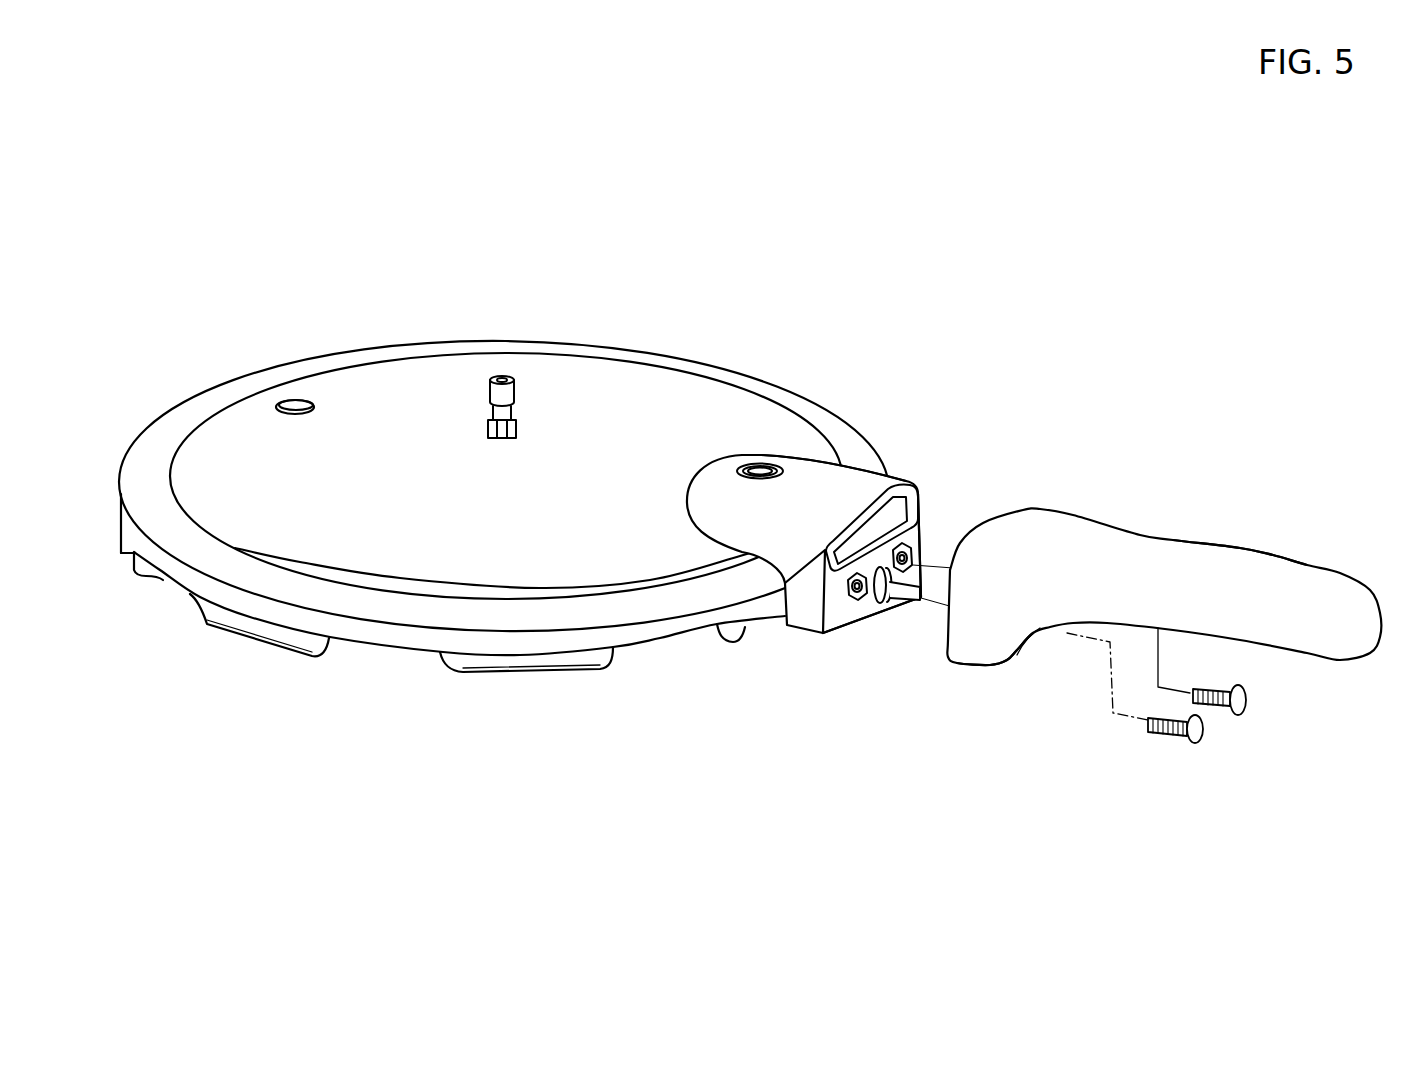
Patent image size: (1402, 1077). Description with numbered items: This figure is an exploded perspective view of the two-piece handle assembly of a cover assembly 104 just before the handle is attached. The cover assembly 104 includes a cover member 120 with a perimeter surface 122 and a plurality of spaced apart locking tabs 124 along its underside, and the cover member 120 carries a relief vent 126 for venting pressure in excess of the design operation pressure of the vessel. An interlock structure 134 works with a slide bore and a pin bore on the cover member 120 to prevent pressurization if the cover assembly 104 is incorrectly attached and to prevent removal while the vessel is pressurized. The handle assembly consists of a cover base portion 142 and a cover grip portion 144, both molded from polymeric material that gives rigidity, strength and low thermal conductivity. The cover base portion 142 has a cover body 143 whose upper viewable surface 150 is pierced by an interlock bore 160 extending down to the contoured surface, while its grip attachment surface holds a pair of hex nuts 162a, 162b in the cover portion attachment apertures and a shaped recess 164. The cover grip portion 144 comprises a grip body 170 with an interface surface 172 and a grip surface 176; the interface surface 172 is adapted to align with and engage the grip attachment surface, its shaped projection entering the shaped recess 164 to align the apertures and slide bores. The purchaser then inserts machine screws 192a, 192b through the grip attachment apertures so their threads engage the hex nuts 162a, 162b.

The cover assembly 104 is at (421, 288).
The cover member 120 is at (327, 388).
The perimeter surface 122 is at (758, 637).
The locking tabs 124 is at (123, 572).
The relief vent 126 is at (519, 387).
The interlock structure 134 is at (908, 598).
The cover base portion 142 is at (860, 482).
The cover body 143 is at (866, 493).
The cover grip portion 144 is at (1307, 568).
The upper viewable surface 150 is at (795, 475).
The interlock bore 160 is at (755, 478).
The hex nut 162a is at (856, 601).
The hex nut 162b is at (907, 552).
The shaped recess 164 is at (904, 500).
The grip body 170 is at (1268, 562).
The interface surface 172 is at (950, 642).
The grip surface 176 is at (1144, 548).
The machine screw 192a is at (1178, 738).
The machine screw 192b is at (1250, 702).